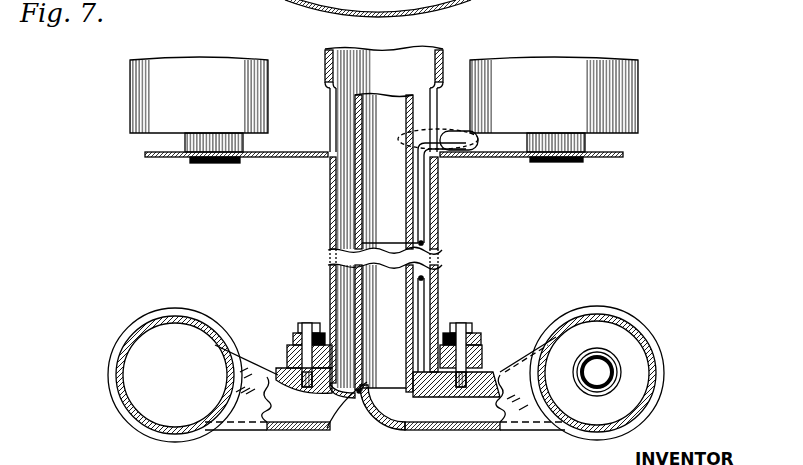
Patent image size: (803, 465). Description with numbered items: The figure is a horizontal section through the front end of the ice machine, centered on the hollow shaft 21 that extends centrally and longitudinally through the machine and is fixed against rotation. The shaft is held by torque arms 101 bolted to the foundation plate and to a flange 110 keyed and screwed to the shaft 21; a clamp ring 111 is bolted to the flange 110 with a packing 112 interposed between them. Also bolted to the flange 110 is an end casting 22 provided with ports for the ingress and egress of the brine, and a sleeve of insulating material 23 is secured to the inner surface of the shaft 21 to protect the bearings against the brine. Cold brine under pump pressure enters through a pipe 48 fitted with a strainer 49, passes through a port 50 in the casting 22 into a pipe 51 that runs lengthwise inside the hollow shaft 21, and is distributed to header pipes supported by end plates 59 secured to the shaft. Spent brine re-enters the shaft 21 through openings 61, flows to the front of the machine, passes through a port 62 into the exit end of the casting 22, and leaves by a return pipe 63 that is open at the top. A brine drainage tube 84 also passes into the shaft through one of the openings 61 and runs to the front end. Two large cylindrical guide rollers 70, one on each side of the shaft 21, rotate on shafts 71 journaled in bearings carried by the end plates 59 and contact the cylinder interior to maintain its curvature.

The hollow shaft 21 is at (446, 52).
The end casting 22 is at (402, 430).
The sleeve of insulating material 23 is at (440, 272).
The pipe 48 is at (648, 340).
The strainer 49 is at (600, 358).
The port 50 is at (375, 405).
The pipe 51 is at (358, 193).
The end plates 59 is at (275, 157).
The openings 61 is at (330, 116).
The port 62 is at (338, 400).
The return pipe 63 is at (118, 358).
The guide rollers 70 is at (130, 92).
The shafts 71 is at (216, 153).
The brine drainage tube 84 is at (426, 200).
The torque arms 101 is at (283, 352).
The flange 110 is at (483, 348).
The clamp ring 111 is at (470, 326).
The packing 112 is at (447, 332).